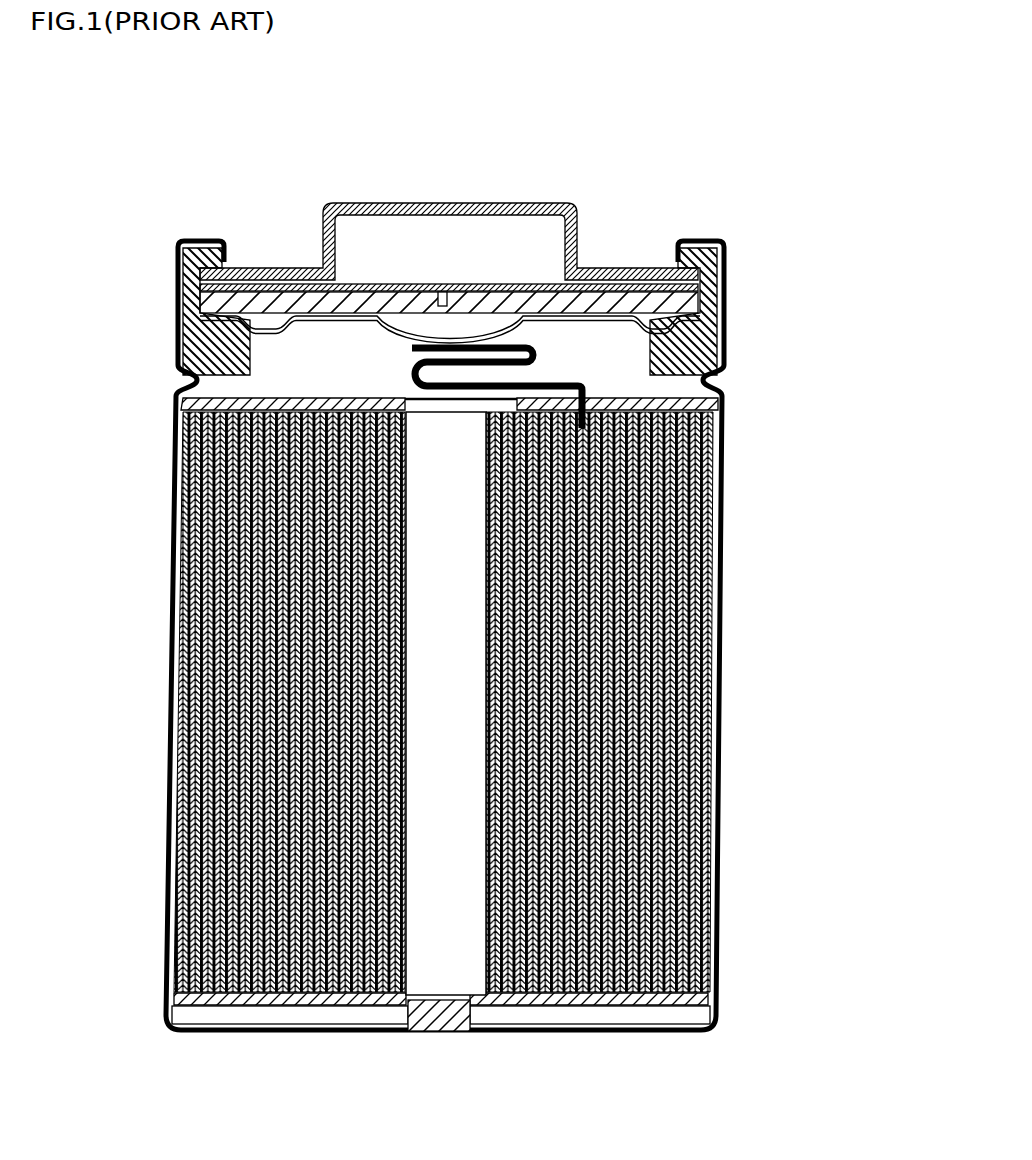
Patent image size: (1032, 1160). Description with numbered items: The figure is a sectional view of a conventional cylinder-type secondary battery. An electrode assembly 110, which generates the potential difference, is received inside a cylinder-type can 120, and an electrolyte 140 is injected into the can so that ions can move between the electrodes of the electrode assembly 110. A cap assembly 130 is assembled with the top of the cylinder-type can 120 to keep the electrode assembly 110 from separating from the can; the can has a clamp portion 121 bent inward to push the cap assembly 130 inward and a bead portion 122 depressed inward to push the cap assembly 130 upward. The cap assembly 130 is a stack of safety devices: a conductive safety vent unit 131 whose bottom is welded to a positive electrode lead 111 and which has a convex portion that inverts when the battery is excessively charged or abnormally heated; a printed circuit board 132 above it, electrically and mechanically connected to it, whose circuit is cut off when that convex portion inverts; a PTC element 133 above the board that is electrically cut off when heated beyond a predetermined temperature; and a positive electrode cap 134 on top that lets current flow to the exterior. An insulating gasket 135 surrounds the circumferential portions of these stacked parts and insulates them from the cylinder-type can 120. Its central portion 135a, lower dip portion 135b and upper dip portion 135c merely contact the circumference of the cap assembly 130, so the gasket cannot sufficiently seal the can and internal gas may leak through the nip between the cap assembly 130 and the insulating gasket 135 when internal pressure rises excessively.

The electrode assembly 110 is at (724, 548).
The positive electrode lead 111 is at (537, 352).
The cylinder-type can 120 is at (160, 548).
The clamp portion 121 is at (178, 248).
The bead portion 122 is at (178, 384).
The cap assembly 130 is at (450, 210).
The conductive safety vent unit 131 is at (580, 124).
The printed circuit board 132 is at (441, 300).
The PTC element 133 is at (497, 296).
The positive electrode cap 134 is at (548, 203).
The insulating gasket 135 is at (555, 307).
The central portion 135a is at (723, 290).
The lower dip portion 135b is at (720, 348).
The upper dip portion 135c is at (700, 245).
The electrolyte 140 is at (441, 1032).